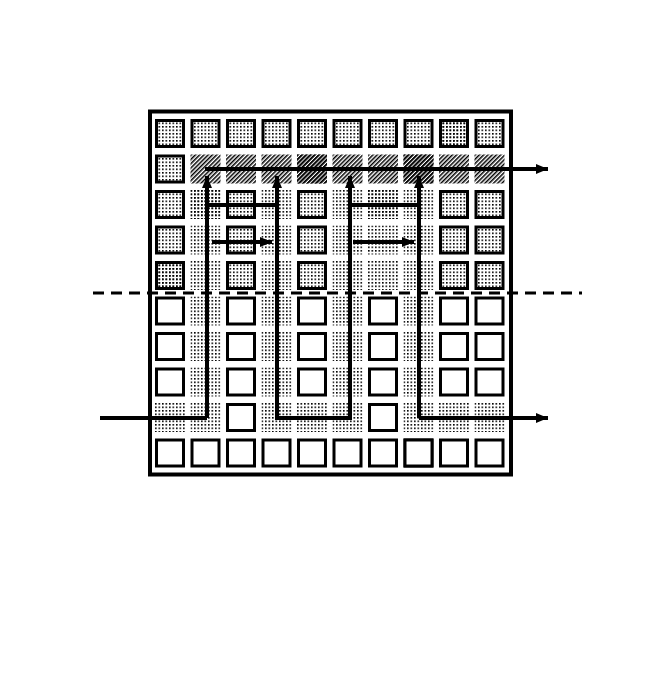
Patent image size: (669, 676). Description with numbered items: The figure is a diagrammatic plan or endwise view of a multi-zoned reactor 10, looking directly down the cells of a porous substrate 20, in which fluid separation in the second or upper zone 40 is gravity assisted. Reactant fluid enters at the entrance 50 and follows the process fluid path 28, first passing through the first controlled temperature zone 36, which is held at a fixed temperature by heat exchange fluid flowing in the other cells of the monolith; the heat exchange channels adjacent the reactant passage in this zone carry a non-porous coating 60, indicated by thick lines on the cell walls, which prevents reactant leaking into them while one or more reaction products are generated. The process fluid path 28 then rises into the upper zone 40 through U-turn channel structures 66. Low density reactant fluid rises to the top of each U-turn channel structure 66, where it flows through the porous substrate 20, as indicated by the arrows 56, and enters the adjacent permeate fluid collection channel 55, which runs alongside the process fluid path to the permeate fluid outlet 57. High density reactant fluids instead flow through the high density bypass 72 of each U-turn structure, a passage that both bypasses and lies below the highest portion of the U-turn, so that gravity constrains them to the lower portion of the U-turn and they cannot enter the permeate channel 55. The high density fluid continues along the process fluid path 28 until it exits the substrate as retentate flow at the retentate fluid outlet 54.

The reactor 10 is at (208, 512).
The porous substrate 20 is at (146, 128).
The process fluid path 28 is at (128, 393).
The entrance 50 is at (122, 415).
The first controlled temperature zone 36 is at (423, 454).
The second zone 40 is at (455, 135).
The permeate fluid collection channel 55 is at (316, 158).
The permeate flow arrows 56 is at (433, 186).
The permeate fluid outlet 57 is at (563, 169).
The non-porous coating 60 is at (181, 272).
The U-turn channel structure 66 is at (230, 196).
The high density bypass 72 is at (236, 233).
The retentate fluid outlet 54 is at (562, 420).